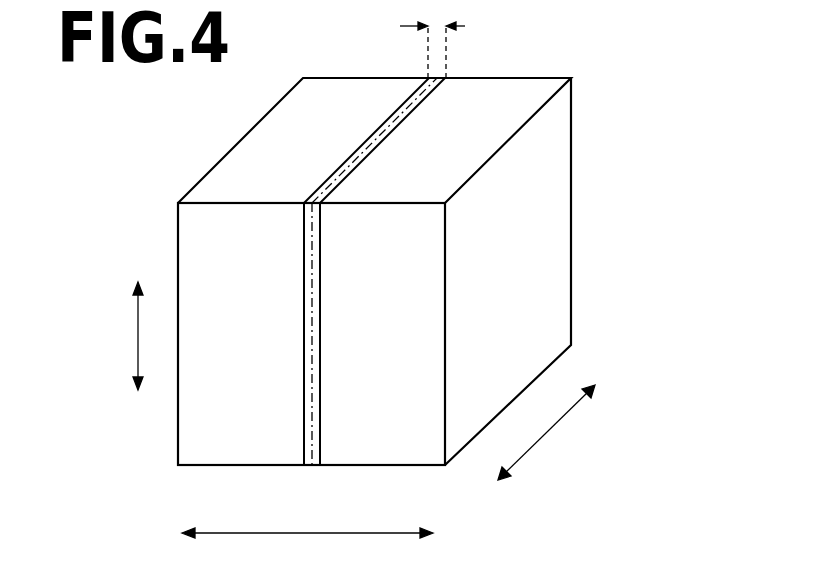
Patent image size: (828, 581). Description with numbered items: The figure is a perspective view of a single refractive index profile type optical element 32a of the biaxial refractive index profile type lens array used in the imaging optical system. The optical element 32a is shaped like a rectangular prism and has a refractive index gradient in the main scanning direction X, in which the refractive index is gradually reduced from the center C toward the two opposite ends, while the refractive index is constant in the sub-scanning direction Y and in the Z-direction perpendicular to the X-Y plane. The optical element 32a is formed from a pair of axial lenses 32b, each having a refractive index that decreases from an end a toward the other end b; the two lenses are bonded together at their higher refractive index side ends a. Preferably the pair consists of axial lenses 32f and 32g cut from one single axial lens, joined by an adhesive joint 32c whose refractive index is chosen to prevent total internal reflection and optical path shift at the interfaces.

The refractive index profile type optical element 32a is at (627, 121).
The axial lens 32b is at (379, 108).
The axial lens 32f is at (329, 88).
The axial lens 32g is at (531, 89).
The adhesive joint 32c is at (438, 84).